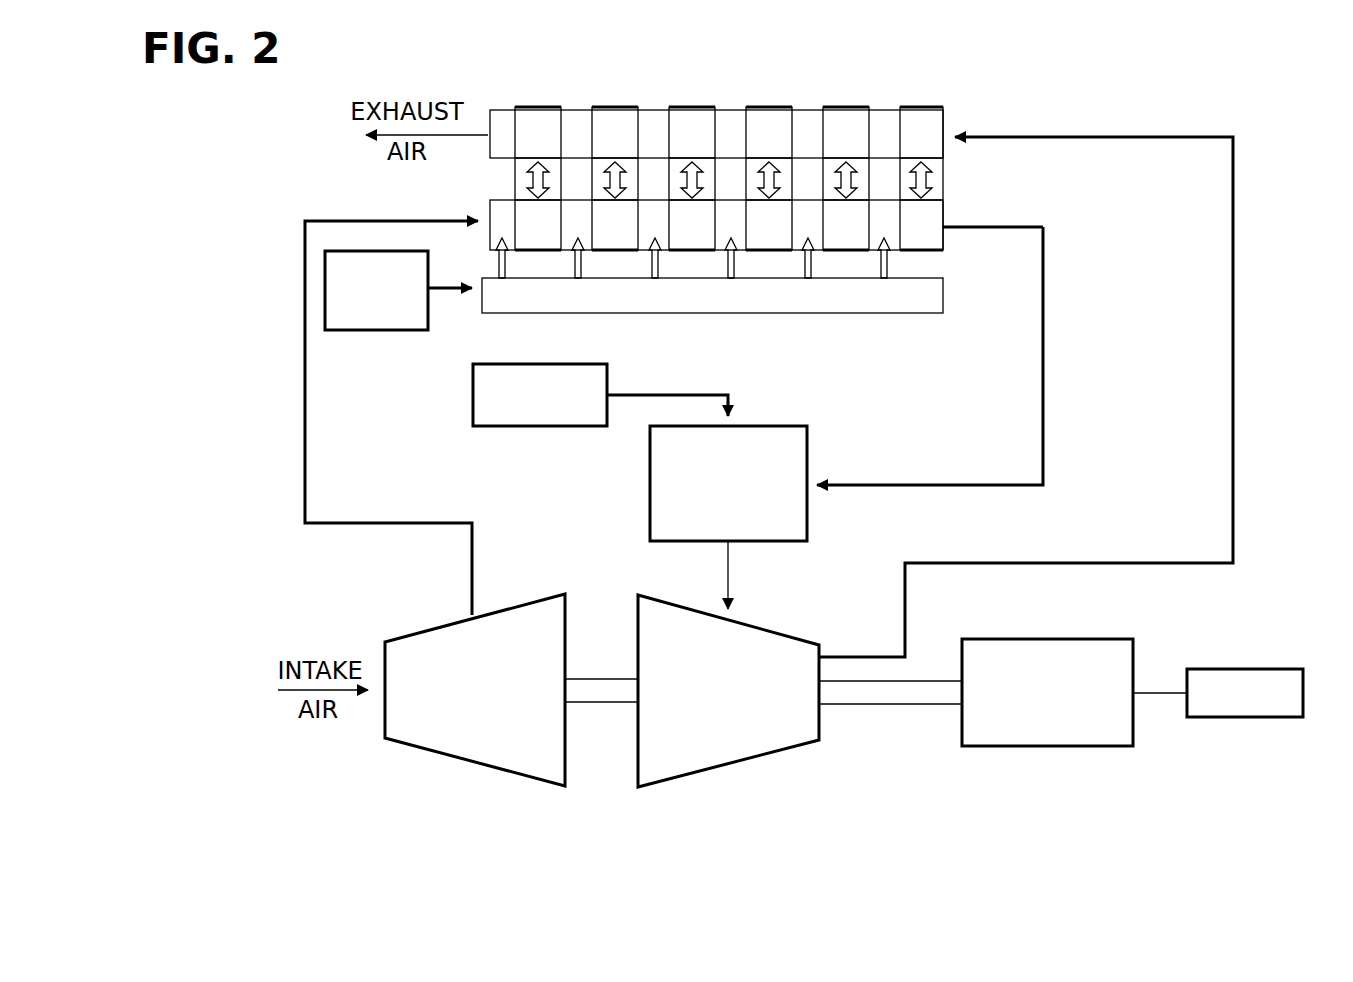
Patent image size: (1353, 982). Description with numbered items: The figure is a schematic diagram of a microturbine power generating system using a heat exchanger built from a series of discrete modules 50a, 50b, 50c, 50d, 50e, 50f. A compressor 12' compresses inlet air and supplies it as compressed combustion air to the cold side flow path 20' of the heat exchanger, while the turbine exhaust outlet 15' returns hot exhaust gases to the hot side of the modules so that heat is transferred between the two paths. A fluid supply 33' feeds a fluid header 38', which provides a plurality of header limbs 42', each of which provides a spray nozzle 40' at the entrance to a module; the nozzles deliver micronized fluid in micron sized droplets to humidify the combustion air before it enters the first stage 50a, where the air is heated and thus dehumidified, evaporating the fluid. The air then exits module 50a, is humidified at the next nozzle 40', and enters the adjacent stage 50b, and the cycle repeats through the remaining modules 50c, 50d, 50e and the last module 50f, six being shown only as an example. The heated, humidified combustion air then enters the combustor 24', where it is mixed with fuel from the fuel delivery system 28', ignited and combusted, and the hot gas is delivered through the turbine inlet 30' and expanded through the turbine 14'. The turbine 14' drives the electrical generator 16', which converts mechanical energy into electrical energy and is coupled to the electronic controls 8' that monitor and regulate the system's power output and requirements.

The electronic controls 8' is at (1133, 384).
The compressor 12' is at (504, 710).
The turbine 14' is at (800, 711).
The turbine exhaust outlet 15' is at (1026, 397).
The electrical generator 16' is at (1047, 731).
The cold side flow path 20' is at (751, 180).
The combustor 24' is at (846, 384).
The fuel delivery system 28' is at (600, 433).
The turbine inlet 30' is at (786, 575).
The fluid supply 33' is at (398, 327).
The fluid header 38' is at (712, 332).
The spray nozzle 40' is at (403, 395).
The header limbs 42' is at (763, 265).
The first heat exchanger module 50a is at (540, 107).
The second heat exchanger module 50b is at (617, 107).
The heat exchanger module 50c is at (694, 107).
The heat exchanger module 50d is at (771, 107).
The heat exchanger module 50e is at (848, 107).
The last heat exchanger module 50f is at (921, 107).